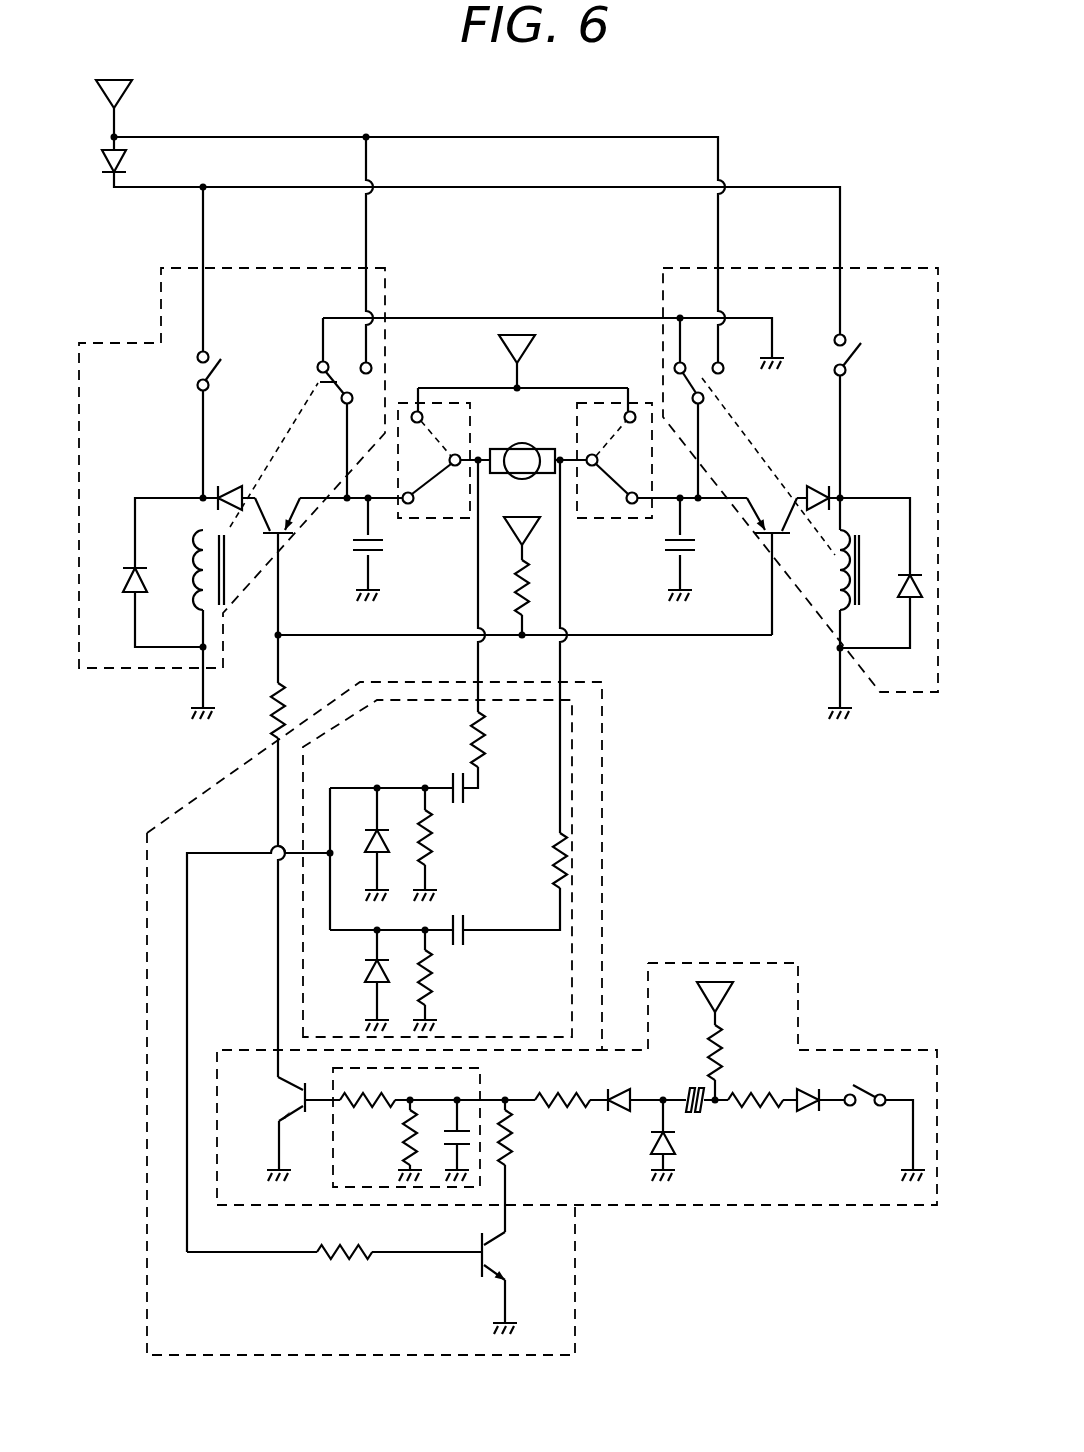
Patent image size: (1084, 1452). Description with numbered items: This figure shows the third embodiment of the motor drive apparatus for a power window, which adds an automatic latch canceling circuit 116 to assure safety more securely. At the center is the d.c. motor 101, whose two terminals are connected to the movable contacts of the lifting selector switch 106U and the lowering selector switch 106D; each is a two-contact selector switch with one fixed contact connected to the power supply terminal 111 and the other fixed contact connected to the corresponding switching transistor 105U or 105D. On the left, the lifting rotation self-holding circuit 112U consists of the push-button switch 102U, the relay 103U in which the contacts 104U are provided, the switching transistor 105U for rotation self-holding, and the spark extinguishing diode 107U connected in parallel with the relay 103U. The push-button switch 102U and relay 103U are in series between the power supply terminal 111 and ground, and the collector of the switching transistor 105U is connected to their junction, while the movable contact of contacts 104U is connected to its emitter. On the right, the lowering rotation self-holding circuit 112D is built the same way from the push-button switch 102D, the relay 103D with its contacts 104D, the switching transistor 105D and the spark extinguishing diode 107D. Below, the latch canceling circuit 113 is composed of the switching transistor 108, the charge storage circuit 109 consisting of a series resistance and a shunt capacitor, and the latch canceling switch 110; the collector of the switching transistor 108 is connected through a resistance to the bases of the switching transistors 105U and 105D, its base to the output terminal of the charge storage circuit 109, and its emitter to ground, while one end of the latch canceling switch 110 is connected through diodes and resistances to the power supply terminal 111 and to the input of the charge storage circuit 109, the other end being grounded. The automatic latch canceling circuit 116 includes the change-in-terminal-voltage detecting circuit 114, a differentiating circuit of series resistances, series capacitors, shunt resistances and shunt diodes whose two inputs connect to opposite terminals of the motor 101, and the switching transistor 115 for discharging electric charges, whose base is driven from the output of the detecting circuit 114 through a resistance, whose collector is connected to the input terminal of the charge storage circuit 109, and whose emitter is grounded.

The d.c. motor 101 is at (522, 444).
The push-button switch 102U is at (198, 374).
The push-button switch 102D is at (861, 342).
The relay 103U is at (197, 573).
The relay 103D is at (867, 578).
The contacts 104U is at (317, 364).
The contacts 104D is at (697, 372).
The switching transistor 105U is at (284, 512).
The switching transistor 105D is at (772, 510).
The lifting selector switch 106U is at (423, 522).
The lowering selector switch 106D is at (625, 522).
The spark extinguishing diode 107U is at (152, 573).
The spark extinguishing diode 107D is at (895, 572).
The switching transistor 108 is at (285, 1100).
The charge storage circuit 109 is at (481, 1086).
The latch canceling switch 110 is at (855, 1110).
The power supply terminal 111 is at (129, 97).
The lifting rotation self-holding circuit 112U is at (254, 268).
The lowering rotation self-holding circuit 112D is at (878, 268).
The latch canceling circuit 113 is at (835, 1050).
The change-in-terminal-voltage detecting circuit 114 is at (585, 723).
The switching transistor 115 is at (497, 1253).
The automatic latch canceling circuit 116 is at (600, 785).